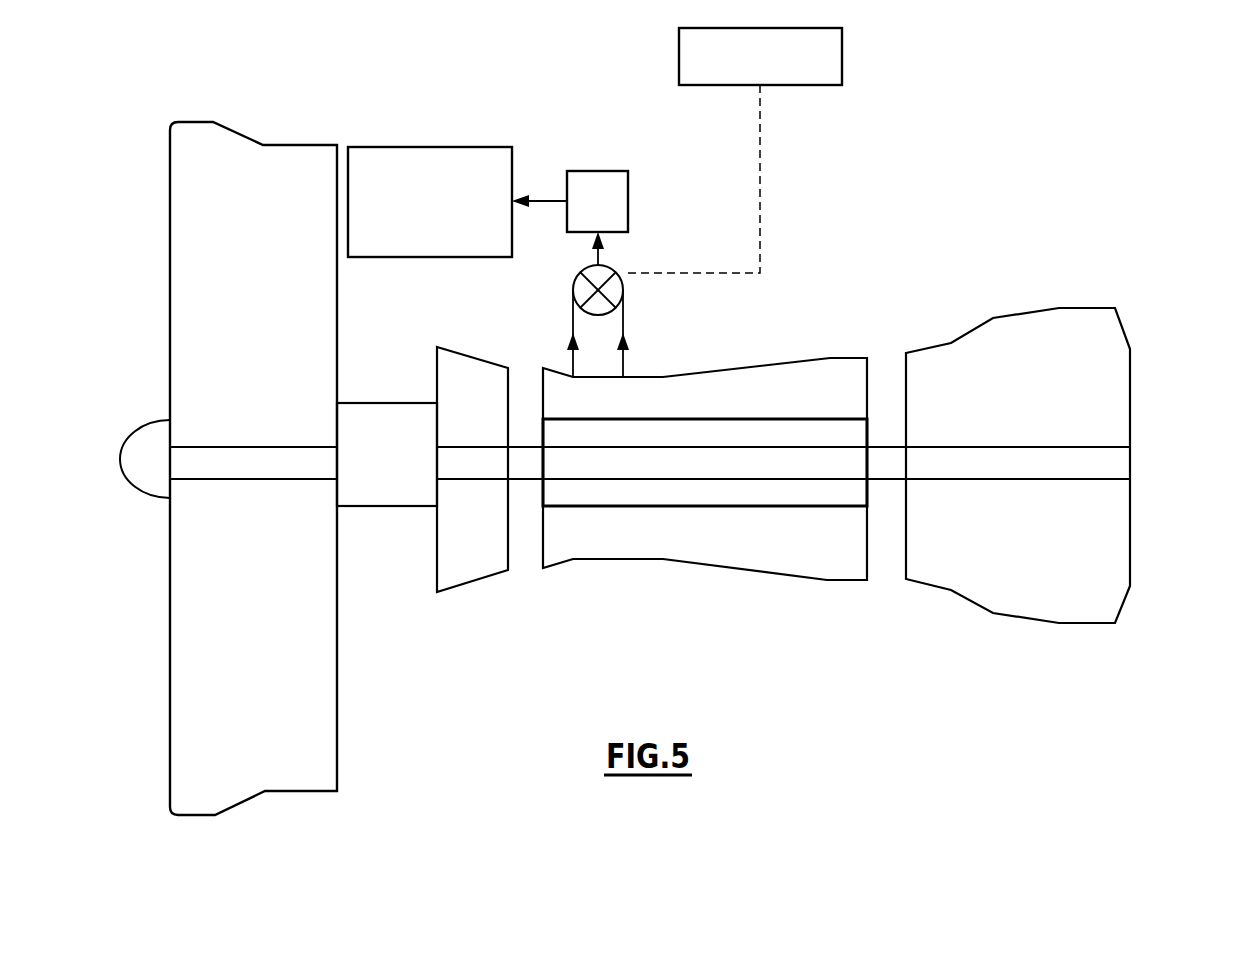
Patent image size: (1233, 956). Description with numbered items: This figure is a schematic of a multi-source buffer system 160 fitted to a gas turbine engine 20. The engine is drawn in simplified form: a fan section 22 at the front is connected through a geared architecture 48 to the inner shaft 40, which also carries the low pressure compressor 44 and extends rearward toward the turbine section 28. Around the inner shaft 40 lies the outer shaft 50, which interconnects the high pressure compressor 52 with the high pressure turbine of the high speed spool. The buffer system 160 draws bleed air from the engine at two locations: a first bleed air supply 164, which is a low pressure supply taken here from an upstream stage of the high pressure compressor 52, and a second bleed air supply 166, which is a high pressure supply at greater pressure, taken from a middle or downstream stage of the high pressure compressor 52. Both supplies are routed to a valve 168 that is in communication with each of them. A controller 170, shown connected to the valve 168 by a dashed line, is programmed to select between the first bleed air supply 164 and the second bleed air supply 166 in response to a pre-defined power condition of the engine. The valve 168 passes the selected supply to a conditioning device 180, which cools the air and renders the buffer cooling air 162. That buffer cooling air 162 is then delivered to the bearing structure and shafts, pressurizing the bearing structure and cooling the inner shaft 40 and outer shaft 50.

The gas turbine engine 20 is at (1128, 232).
The fan section 22 is at (266, 636).
The turbine section 28 is at (1040, 396).
The inner shaft 40 is at (602, 481).
The low pressure compressor 44 is at (493, 541).
The geared architecture 48 is at (399, 467).
The outer shaft 50 is at (722, 418).
The high pressure compressor 52 is at (731, 542).
The buffer system 160 is at (664, 208).
The buffer cooling air 162 is at (548, 200).
The first bleed air supply 164 is at (571, 342).
The second bleed air supply 166 is at (627, 338).
The valve 168 is at (616, 268).
The controller 170 is at (842, 62).
The conditioning device 180 is at (618, 171).